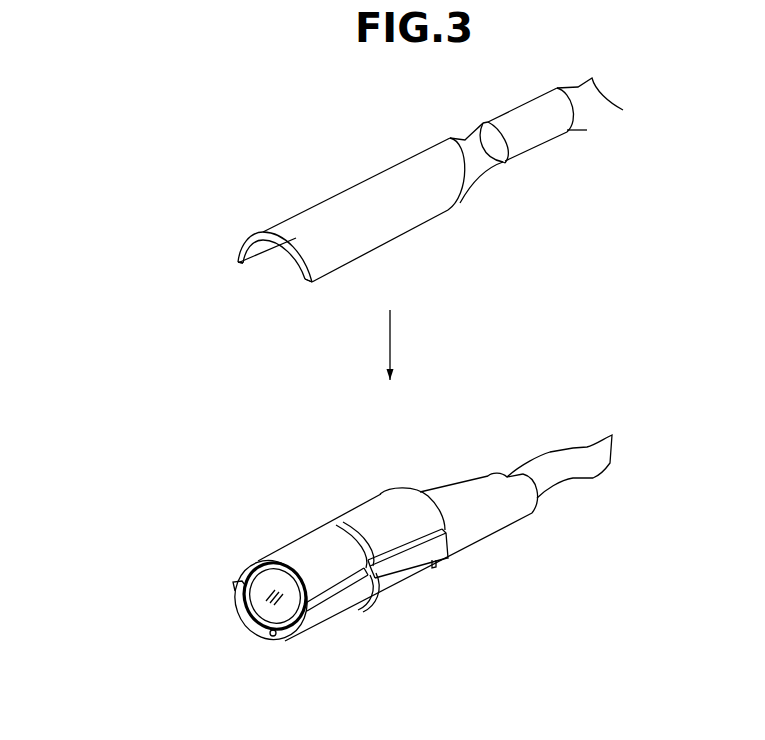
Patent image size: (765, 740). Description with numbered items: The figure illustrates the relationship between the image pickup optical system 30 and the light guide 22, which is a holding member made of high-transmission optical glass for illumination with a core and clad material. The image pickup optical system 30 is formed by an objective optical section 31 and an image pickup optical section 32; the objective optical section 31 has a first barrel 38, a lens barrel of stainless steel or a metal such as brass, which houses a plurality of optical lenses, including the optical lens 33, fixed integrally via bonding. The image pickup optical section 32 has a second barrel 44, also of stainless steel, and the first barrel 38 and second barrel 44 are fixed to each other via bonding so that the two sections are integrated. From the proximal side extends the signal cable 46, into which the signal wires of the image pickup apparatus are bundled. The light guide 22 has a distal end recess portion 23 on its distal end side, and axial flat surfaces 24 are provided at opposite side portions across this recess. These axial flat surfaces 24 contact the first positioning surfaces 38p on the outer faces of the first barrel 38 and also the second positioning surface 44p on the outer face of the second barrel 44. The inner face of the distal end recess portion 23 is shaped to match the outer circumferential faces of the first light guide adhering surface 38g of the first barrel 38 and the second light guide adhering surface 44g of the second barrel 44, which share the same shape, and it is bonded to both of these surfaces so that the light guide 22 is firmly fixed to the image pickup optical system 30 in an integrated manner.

The light guide 22 is at (360, 162).
The distal end recess portion 23 is at (270, 266).
The axial flat surfaces 24 is at (240, 266).
The image pickup optical system 30 is at (322, 664).
The objective optical section 31 is at (338, 614).
The image pickup optical section 32 is at (409, 569).
The optical lens 33 is at (253, 613).
The first barrel 38 is at (214, 485).
The first positioning surfaces 38p is at (239, 578).
The first light guide adhering surface 38g is at (321, 585).
The second barrel 44 is at (447, 444).
The second light guide adhering surface 44g is at (366, 517).
The second positioning surface 44p is at (429, 534).
The signal cable 46 is at (610, 466).